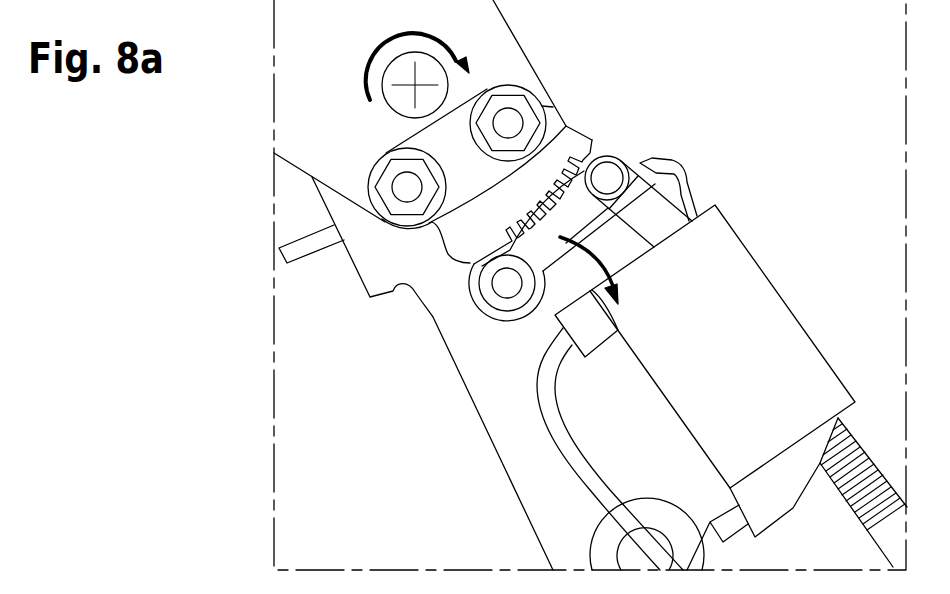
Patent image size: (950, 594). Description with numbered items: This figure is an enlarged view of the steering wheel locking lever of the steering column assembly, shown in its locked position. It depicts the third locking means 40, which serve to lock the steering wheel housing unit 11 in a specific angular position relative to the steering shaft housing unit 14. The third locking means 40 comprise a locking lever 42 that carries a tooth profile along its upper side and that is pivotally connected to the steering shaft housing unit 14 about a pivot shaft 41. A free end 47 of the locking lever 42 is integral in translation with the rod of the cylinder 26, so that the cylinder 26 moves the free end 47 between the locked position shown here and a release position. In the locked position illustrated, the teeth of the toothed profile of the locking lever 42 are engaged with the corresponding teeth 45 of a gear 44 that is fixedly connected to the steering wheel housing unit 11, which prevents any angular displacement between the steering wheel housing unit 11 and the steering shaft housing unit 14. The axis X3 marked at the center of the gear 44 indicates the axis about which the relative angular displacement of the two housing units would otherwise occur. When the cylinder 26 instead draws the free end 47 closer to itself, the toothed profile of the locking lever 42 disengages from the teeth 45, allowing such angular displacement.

The steering wheel housing unit 11 is at (534, 40).
The steering shaft housing unit 14 is at (311, 209).
The cylinder 26 is at (749, 296).
The third locking means 40 is at (728, 156).
The pivot shaft 41 is at (489, 288).
The locking lever 42 is at (545, 252).
The gear 44 is at (498, 233).
The teeth 45 is at (590, 127).
The free end 47 is at (615, 163).
The rotation axis X3 is at (415, 85).